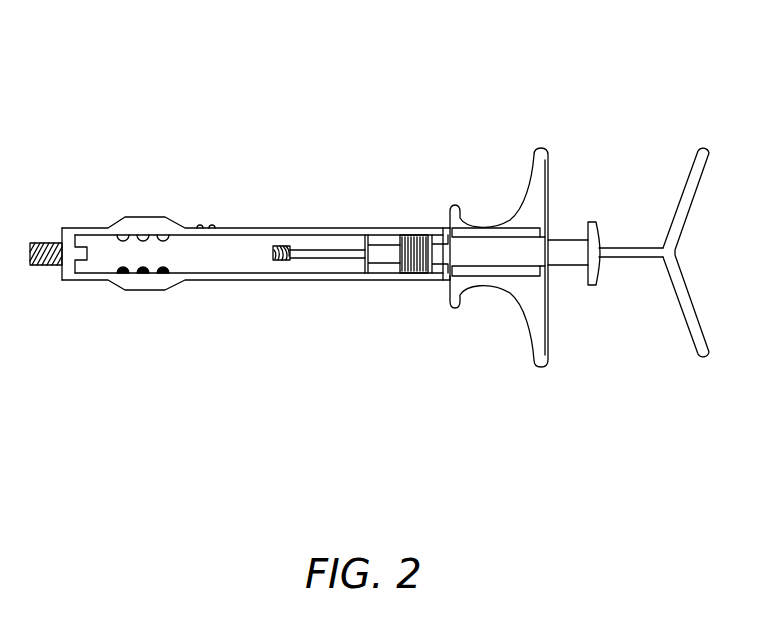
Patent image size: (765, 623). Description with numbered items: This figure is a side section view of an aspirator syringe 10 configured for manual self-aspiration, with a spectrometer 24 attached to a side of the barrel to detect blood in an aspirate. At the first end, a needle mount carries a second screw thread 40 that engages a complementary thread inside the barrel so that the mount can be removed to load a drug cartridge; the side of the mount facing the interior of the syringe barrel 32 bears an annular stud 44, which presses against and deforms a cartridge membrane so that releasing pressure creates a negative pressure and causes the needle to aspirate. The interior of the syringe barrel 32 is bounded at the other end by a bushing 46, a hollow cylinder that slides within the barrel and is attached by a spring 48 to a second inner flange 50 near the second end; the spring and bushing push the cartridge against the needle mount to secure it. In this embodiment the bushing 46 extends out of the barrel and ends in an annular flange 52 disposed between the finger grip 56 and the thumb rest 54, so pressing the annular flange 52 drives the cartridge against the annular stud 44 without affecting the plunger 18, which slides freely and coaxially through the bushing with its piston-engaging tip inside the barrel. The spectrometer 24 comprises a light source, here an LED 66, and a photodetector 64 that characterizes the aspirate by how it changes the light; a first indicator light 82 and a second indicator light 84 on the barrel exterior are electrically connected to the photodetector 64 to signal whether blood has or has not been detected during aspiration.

The aspirator syringe 10 is at (82, 72).
The spectrometer 24 is at (141, 180).
The second screw thread 40 is at (43, 268).
The annular stud 44 is at (87, 273).
The photodetector 64 is at (165, 277).
The LED 66 is at (167, 237).
The first indicator light 82 is at (200, 225).
The second indicator light 84 is at (215, 225).
The interior of the syringe barrel 32 is at (247, 252).
The spring 48 is at (403, 230).
The second inner flange 50 is at (437, 230).
The bushing 46 is at (503, 255).
The finger grip 56 is at (540, 160).
The plunger 18 is at (643, 258).
The annular flange 52 is at (597, 228).
The thumb rest 54 is at (697, 342).